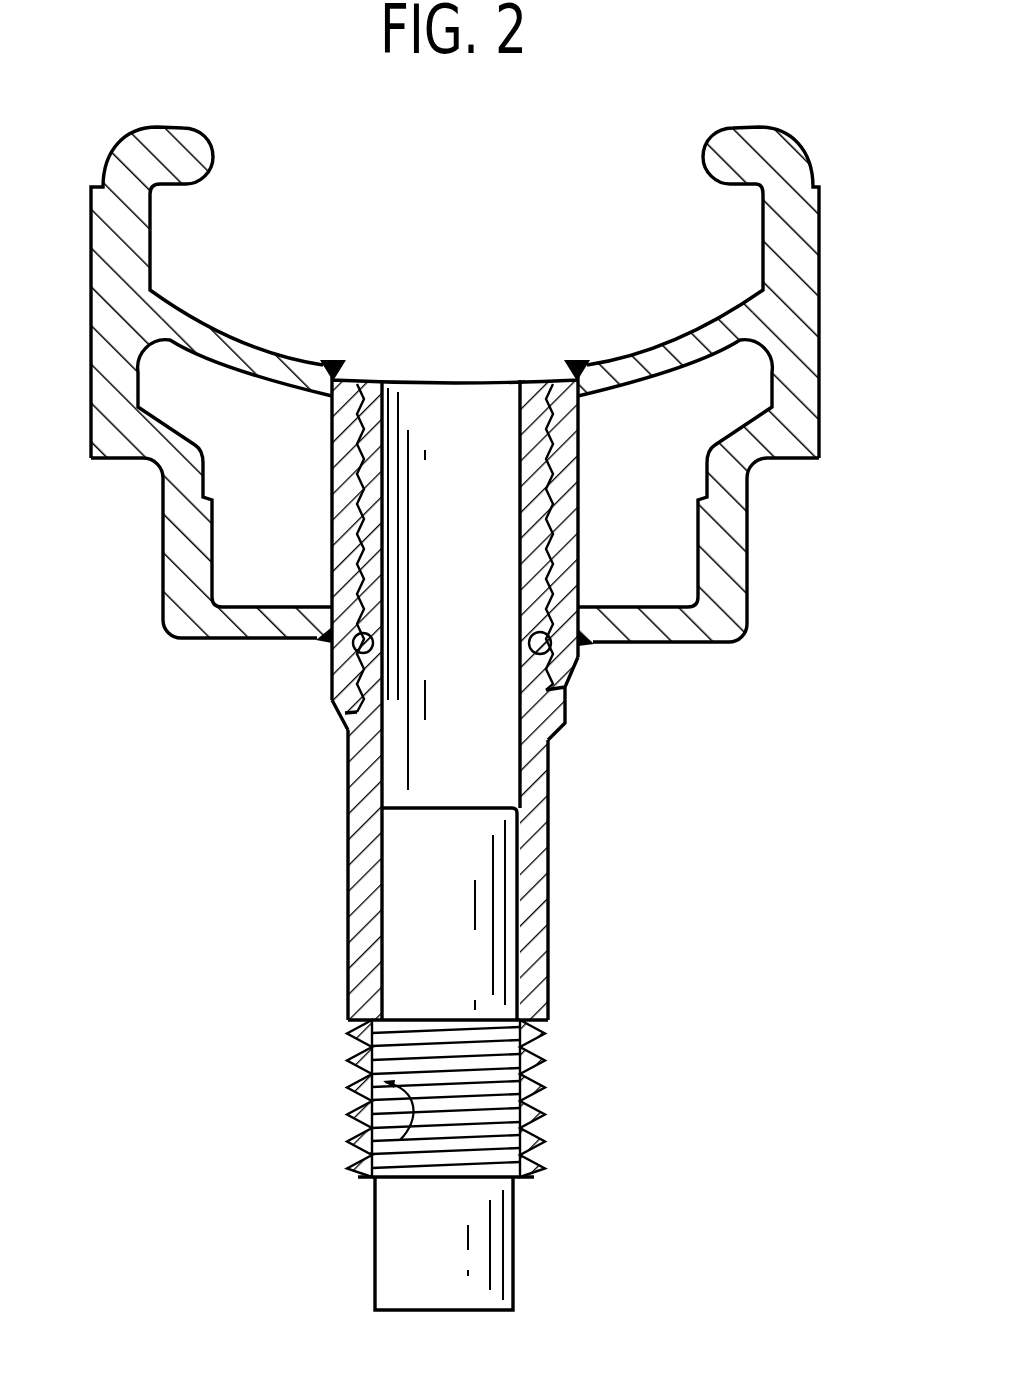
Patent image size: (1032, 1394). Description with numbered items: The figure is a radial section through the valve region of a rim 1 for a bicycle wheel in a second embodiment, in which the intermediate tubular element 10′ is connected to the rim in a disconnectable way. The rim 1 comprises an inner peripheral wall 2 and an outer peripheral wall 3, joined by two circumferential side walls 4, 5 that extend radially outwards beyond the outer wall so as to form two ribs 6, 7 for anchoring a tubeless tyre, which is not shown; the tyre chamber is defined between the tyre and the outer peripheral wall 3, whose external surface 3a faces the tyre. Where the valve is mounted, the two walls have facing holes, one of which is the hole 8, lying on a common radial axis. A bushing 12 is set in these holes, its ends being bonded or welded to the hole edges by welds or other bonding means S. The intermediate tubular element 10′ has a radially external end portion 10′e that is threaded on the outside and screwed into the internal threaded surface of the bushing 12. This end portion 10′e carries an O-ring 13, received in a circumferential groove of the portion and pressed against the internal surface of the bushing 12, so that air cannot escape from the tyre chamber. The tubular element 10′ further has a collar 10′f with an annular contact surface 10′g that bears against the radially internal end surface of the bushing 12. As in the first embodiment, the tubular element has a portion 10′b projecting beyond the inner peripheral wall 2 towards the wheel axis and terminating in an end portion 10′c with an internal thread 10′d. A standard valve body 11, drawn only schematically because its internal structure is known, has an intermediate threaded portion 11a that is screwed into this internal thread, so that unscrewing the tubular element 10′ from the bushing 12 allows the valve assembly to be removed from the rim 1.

The rim for a bicycle wheel 1 is at (855, 373).
The inner peripheral wall 2 is at (658, 618).
The outer peripheral wall 3 is at (655, 352).
The external surface of the outer peripheral wall 3a is at (262, 360).
The circumferential side wall 4 is at (182, 550).
The circumferential side wall 5 is at (732, 567).
The rib for anchorage of a tubeless tire 6 is at (93, 193).
The rib for anchorage of a tubeless tire 7 is at (800, 234).
The hole 8 is at (568, 623).
The welds or other bonding means S is at (338, 360).
The bushing 12 is at (580, 510).
The O-ring 13 is at (337, 687).
The intermediate tubular element 10′ is at (345, 838).
The radially external end portion 10′e is at (372, 447).
The collar 10′f is at (348, 703).
The annular contact surface 10′g is at (567, 658).
The nipple body 10′b is at (530, 847).
The nipple lower thread 10′c is at (533, 1110).
The nipple thread end 10′d is at (350, 1147).
The valve body 11 is at (525, 1253).
The intermediate threaded portion 11a is at (443, 1082).